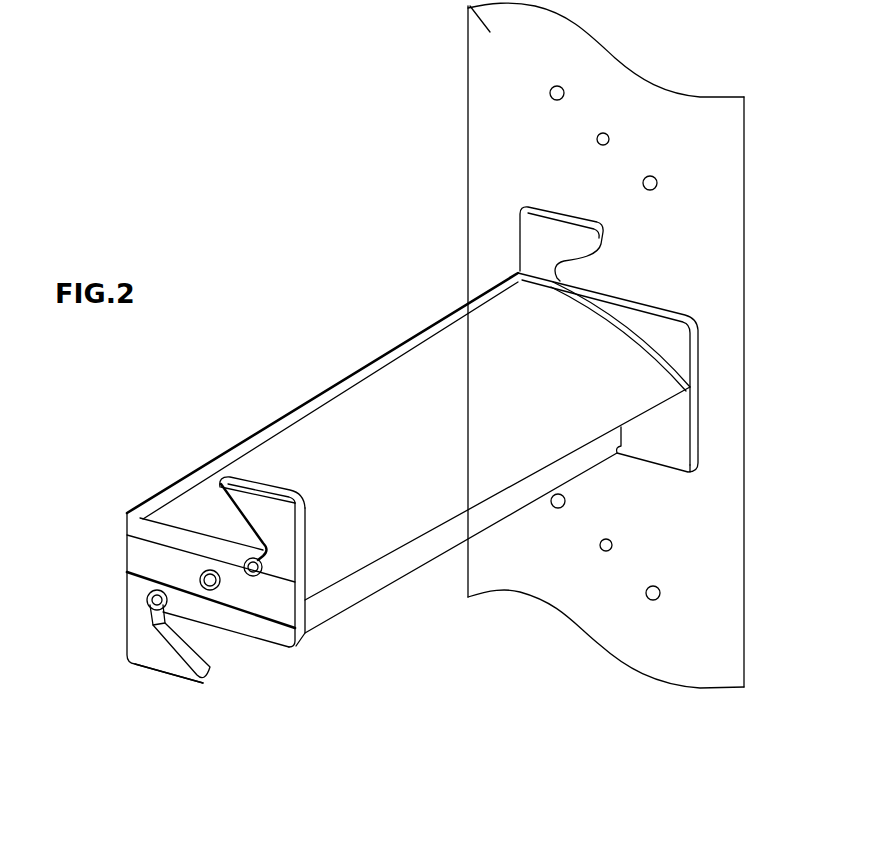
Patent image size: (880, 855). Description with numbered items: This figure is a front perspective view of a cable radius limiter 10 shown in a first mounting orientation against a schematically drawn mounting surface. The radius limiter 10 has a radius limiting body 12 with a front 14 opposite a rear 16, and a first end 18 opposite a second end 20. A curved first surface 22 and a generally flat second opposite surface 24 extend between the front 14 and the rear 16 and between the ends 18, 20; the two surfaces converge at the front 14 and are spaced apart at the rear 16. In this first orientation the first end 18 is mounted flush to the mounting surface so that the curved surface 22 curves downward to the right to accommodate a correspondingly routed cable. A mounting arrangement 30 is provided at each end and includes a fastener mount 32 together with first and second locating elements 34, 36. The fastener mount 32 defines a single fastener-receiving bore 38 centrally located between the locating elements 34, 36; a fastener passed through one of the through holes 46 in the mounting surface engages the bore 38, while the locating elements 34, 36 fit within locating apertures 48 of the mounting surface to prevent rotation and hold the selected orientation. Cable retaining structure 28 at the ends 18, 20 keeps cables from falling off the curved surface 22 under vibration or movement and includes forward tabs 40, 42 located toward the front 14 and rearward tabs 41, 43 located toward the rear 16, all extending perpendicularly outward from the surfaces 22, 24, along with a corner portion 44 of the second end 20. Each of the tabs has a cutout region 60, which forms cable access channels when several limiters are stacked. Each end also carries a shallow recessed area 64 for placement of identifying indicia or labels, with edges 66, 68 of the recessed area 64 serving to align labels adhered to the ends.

The cable radius limiter 10 is at (297, 226).
The radius limiting body 12 is at (712, 293).
The front 14 is at (474, 571).
The rear 16 is at (196, 373).
The first end 18 is at (728, 374).
The second end 20 is at (116, 591).
The first surface 22 is at (440, 365).
The second opposite surface 24 is at (254, 644).
The cable retaining structure 28 is at (303, 473).
The mounting arrangement 30 is at (234, 650).
The fastener mount 32 is at (208, 568).
The first locating element 34 is at (154, 604).
The second locating element 36 is at (262, 553).
The bore 38 is at (219, 583).
The forward tab 40 is at (257, 505).
The rearward tab 41 is at (563, 228).
The forward tab 42 is at (677, 455).
The rearward tab 43 is at (172, 666).
The corner portion 44 is at (673, 336).
The through holes 46 is at (598, 142).
The locating apertures 48 is at (648, 175).
The cutout region 60 is at (246, 515).
The recessed area 64 is at (286, 592).
The edge 66 is at (147, 545).
The edge 68 is at (127, 572).